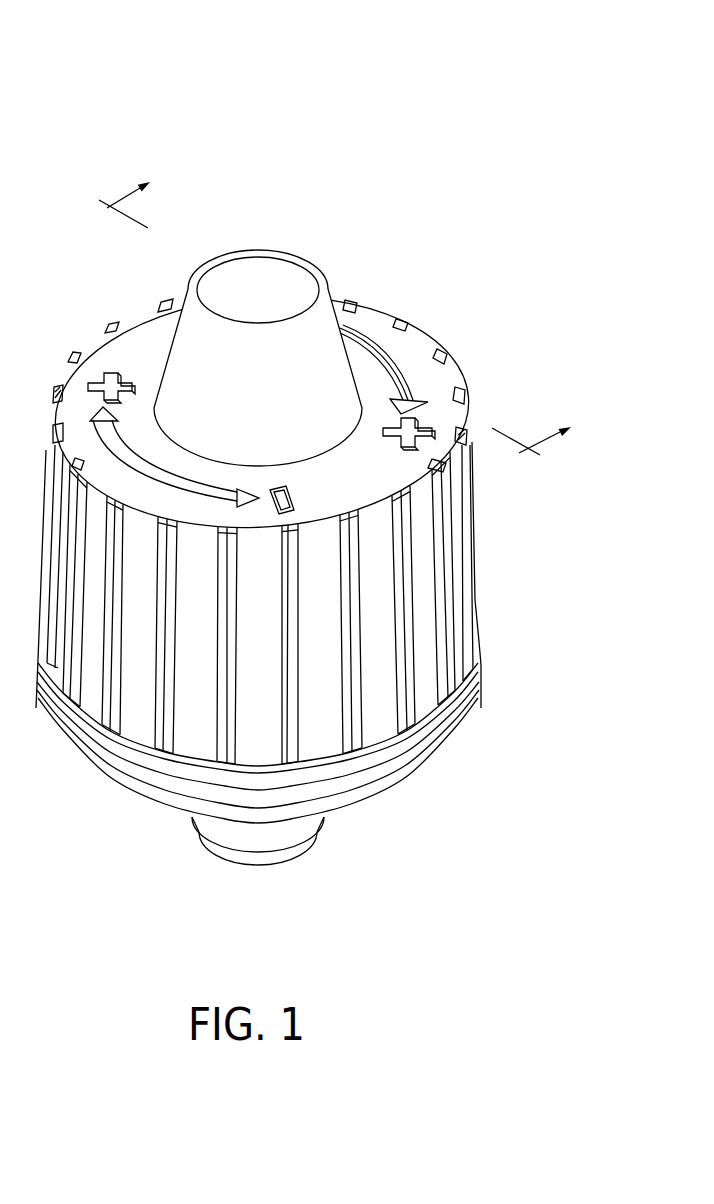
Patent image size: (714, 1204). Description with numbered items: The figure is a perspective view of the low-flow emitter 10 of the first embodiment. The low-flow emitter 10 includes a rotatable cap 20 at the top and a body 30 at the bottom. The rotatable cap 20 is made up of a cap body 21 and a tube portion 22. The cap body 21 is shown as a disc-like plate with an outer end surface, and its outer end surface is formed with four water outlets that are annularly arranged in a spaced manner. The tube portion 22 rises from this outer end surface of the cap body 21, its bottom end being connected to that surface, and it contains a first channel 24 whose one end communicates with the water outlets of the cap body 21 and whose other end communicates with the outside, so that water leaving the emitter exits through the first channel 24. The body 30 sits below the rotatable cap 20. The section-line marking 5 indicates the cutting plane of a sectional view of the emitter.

The low-flow emitter 10 is at (392, 100).
The rotatable cap 20 is at (508, 232).
The cap body 21 is at (430, 383).
The tube portion 22 is at (298, 353).
The first channel 24 is at (258, 278).
The body 30 is at (196, 858).
The section line of FIG. 5 is at (315, 341).